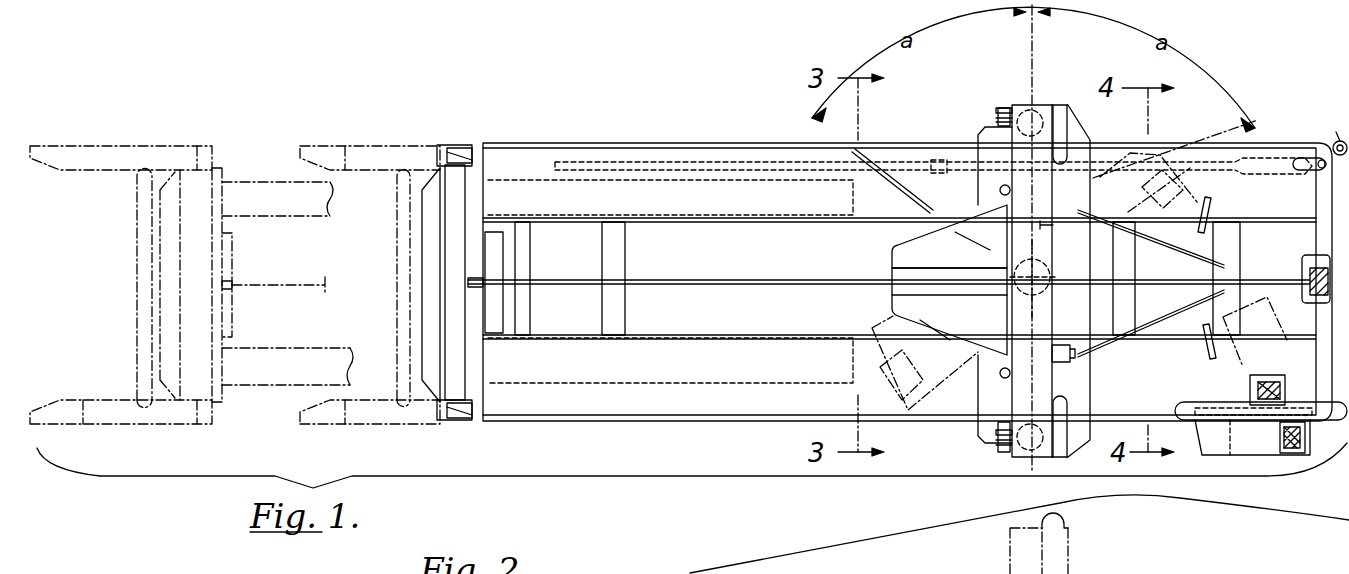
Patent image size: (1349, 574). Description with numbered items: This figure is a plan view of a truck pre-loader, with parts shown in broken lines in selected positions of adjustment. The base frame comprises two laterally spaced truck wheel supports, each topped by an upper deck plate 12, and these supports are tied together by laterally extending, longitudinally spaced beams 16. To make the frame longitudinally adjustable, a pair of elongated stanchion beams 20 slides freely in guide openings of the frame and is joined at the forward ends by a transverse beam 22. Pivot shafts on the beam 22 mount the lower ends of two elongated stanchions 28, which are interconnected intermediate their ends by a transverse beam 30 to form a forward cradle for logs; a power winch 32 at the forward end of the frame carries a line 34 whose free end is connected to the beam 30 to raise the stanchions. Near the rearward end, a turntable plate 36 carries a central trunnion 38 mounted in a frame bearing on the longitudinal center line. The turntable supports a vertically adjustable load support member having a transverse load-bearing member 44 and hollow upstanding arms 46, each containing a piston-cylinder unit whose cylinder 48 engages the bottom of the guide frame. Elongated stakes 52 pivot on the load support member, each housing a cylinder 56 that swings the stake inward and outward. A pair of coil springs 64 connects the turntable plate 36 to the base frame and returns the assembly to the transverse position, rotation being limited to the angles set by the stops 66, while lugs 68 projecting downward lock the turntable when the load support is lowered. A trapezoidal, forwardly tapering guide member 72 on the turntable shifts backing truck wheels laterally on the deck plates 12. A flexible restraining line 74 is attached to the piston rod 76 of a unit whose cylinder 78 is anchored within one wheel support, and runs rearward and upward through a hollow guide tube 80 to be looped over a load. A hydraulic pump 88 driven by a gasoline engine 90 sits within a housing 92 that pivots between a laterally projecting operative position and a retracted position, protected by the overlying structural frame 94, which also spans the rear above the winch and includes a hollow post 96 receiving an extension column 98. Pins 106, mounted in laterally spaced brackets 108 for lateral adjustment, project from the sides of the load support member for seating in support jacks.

In FIG. 1, the upper deck plate 12 is at (528, 165).
In FIG. 1, the laterally extending beams 16 is at (600, 254).
In FIG. 1, the stanchion beams 20 is at (278, 182).
In FIG. 1, the transverse beam 22 is at (210, 228).
In FIG. 1, the stanchions 28 is at (70, 147).
In FIG. 1, the transverse beam 30 is at (137, 280).
In FIG. 1, the power winch 32 is at (1306, 290).
In FIG. 1, the line 34 is at (800, 282).
In FIG. 1, the turntable plate 36 is at (980, 182).
In FIG. 1, the central trunnion 38 is at (1050, 296).
In FIG. 1, the transverse load-bearing member 44 is at (1050, 228).
In FIG. 1, the upstanding arms 46 is at (1040, 112).
In FIG. 2, the upstanding arms 46 is at (1010, 566).
In FIG. 1, the cylinder 48 is at (1078, 462).
In FIG. 1, the stakes 52 is at (1072, 142).
In FIG. 1, the cylinder 56 is at (1075, 355).
In FIG. 1, the coil springs 64 is at (1185, 252).
In FIG. 1, the stops 66 is at (1209, 208).
In FIG. 1, the lugs 68 is at (1000, 192).
In FIG. 1, the guide member 72 is at (892, 255).
In FIG. 1, the flexible restraining line 74 is at (968, 163).
In FIG. 1, the piston rod 76 is at (918, 165).
In FIG. 1, the cylinder 78 is at (648, 160).
In FIG. 1, the guide tube 80 is at (1300, 170).
In FIG. 1, the hydraulic pump 88 is at (1265, 378).
In FIG. 1, the gasoline engine 90 is at (1280, 440).
In FIG. 1, the housing 92 is at (1204, 443).
In FIG. 1, the structural frame 94 is at (1333, 198).
In FIG. 1, the hollow post 96 is at (1334, 142).
In FIG. 1, the extension column 98 is at (1338, 132).
In FIG. 1, the pin 106 is at (1002, 108).
In FIG. 1, the brackets 108 is at (998, 118).